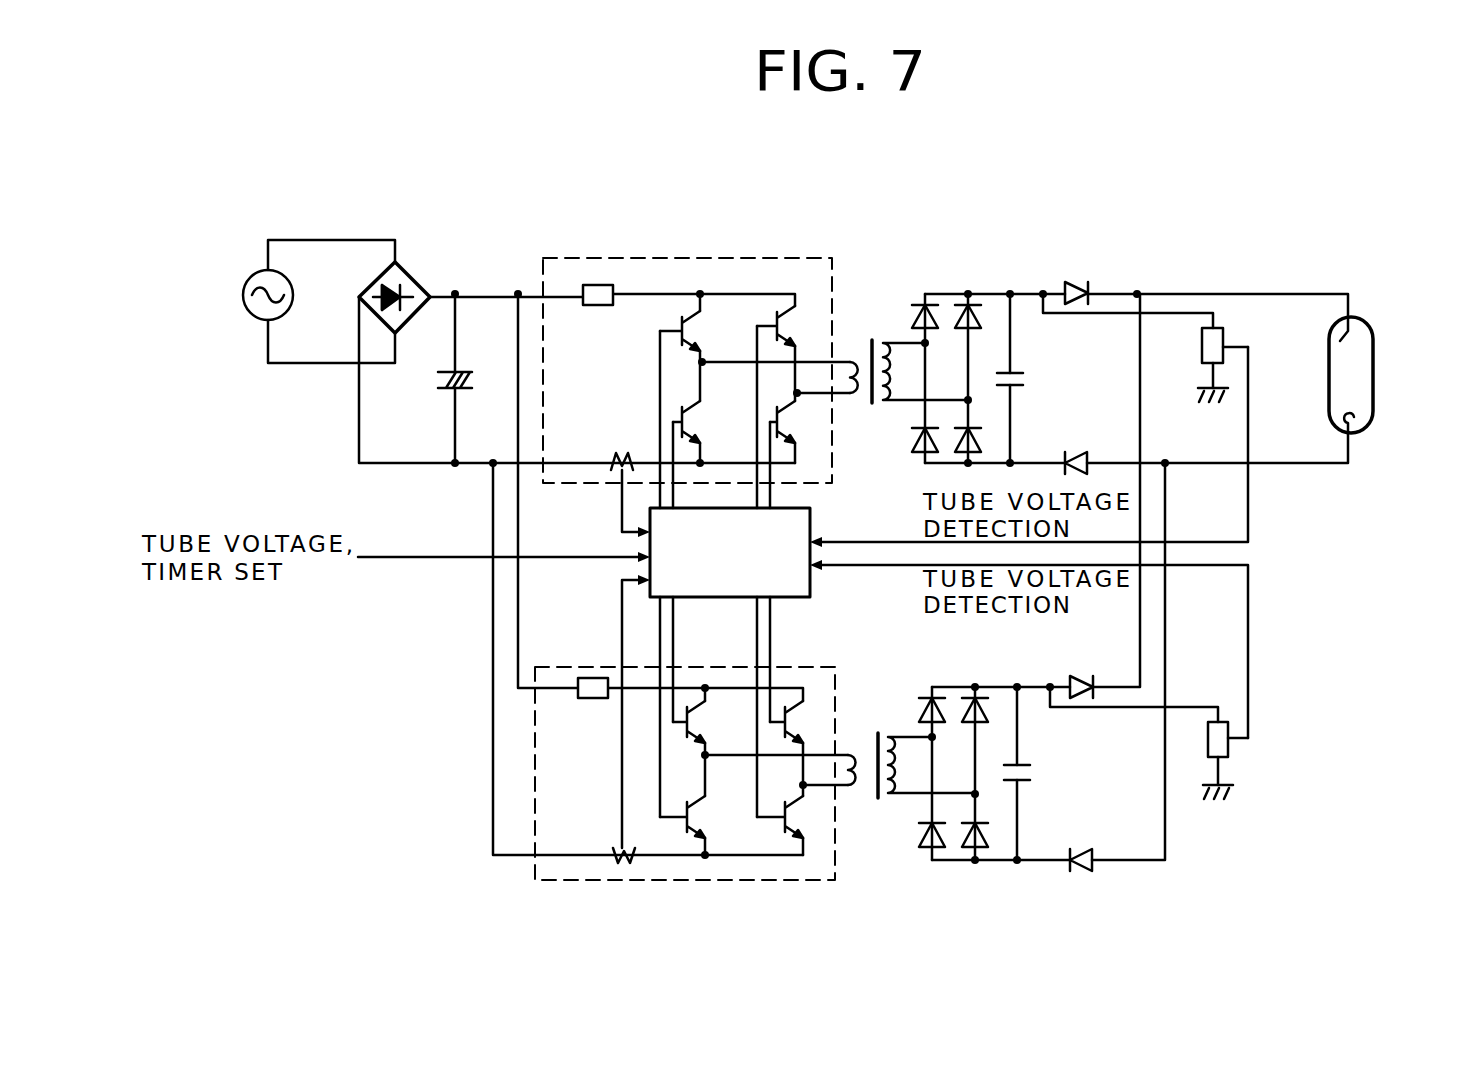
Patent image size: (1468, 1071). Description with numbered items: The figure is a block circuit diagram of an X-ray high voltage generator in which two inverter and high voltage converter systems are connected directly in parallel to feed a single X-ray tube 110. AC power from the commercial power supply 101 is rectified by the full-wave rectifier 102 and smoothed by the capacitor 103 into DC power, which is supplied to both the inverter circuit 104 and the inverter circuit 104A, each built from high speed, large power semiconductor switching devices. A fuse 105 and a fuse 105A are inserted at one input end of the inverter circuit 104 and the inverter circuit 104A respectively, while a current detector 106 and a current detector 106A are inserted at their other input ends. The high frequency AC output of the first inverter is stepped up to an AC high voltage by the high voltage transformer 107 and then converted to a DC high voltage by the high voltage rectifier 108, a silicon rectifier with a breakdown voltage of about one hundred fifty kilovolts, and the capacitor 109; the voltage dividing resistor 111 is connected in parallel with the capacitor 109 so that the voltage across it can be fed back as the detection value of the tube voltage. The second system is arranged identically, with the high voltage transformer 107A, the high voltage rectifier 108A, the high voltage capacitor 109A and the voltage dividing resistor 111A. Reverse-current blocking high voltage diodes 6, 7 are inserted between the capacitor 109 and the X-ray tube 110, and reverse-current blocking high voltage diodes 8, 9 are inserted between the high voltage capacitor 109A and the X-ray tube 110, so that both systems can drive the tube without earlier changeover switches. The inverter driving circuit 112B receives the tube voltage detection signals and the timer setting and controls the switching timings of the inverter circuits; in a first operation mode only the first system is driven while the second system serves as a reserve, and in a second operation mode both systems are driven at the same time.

The commercial power supply 101 is at (243, 298).
The full-wave rectifier 102 is at (415, 283).
The capacitor 103 is at (445, 393).
The inverter circuit 104 is at (677, 257).
The fuse 105 is at (597, 285).
The current detector 106 is at (622, 455).
The high voltage transformer 107 is at (870, 340).
The high voltage rectifier 108 is at (938, 293).
The capacitor 109 is at (1017, 373).
The reverse-current blocking high voltage diode 6 is at (1073, 287).
The reverse-current blocking high voltage diode 7 is at (1073, 455).
The X-ray tube 110 is at (1373, 365).
The voltage dividing resistor 111 is at (1223, 335).
The inverter driving circuit 112B is at (812, 592).
The inverter circuit 104A is at (787, 665).
The fuse 105A is at (592, 678).
The current detector 106A is at (620, 850).
The high voltage transformer 107A is at (877, 797).
The high voltage rectifier 108A is at (945, 687).
The high voltage capacitor 109A is at (1020, 765).
The reverse-current blocking high voltage diode 8 is at (1078, 685).
The reverse-current blocking high voltage diode 9 is at (1078, 850).
The voltage dividing resistor 111A is at (1230, 753).